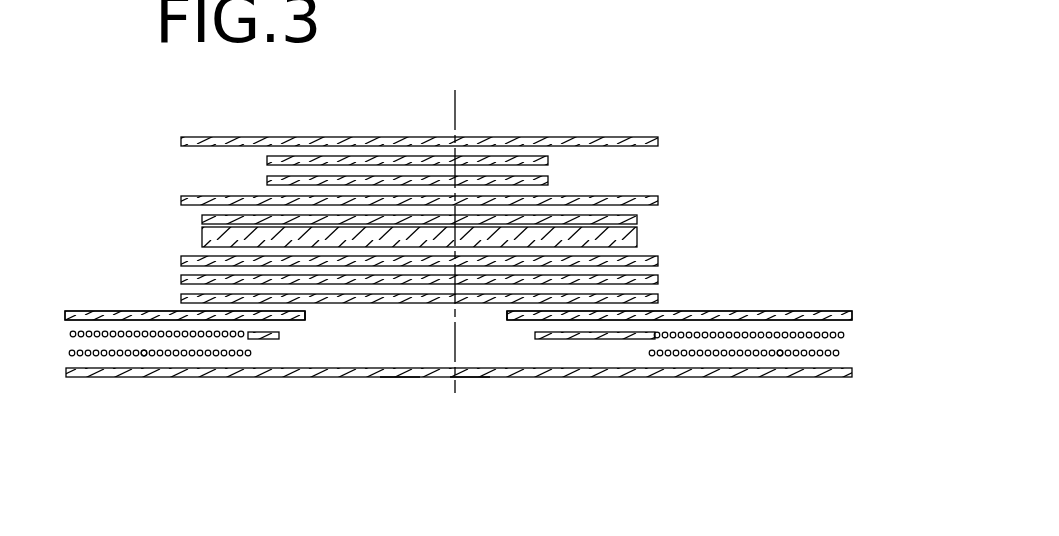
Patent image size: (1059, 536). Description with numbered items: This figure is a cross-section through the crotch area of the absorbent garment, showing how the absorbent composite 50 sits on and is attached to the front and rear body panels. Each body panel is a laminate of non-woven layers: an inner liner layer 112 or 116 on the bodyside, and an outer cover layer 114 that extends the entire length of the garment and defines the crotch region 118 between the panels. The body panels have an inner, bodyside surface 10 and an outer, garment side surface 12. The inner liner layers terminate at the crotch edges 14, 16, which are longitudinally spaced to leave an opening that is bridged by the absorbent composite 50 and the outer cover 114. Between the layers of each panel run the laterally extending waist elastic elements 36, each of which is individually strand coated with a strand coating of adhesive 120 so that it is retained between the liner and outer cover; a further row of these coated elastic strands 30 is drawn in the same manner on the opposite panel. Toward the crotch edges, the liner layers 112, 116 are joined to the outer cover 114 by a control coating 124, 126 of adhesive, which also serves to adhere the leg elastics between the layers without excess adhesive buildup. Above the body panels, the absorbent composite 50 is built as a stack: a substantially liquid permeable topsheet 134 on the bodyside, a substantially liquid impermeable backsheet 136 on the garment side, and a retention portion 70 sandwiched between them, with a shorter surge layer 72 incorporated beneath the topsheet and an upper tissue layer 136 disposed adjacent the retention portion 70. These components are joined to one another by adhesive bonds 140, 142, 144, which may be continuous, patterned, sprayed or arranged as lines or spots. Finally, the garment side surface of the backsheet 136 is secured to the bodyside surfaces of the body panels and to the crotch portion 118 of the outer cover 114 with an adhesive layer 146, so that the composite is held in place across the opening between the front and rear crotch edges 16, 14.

The inner, bodyside surface 10 is at (87, 311).
The outer, garment side surface 12 is at (157, 378).
The terminal edge (crotch edge of rear body panel) 14 is at (305, 316).
The terminal edge (crotch edge of front body panel) 16 is at (510, 315).
The apertures (right) 30 is at (779, 356).
The laterally extending elastic elements 36 is at (140, 356).
The absorbent composite 50 is at (560, 125).
The retention portion 70 is at (637, 237).
The surge layer 72 is at (267, 180).
The inner layer (liner) of rear body panel 112 is at (773, 312).
The outer layer (outer cover) 114 is at (397, 378).
The inner layer (liner) of front body panel 116 is at (139, 311).
The crotch region 118 is at (468, 378).
The strand coating of adhesive 120 is at (107, 336).
The control coating of adhesive 124 is at (278, 335).
The control coating of adhesive 126 is at (605, 338).
The topsheet 134 is at (289, 137).
The backsheet 136 is at (202, 220).
The adhesive bond 140 is at (550, 163).
The adhesive bond 142 is at (660, 201).
The adhesive bond 144 is at (660, 262).
The adhesive layer 146 is at (660, 298).